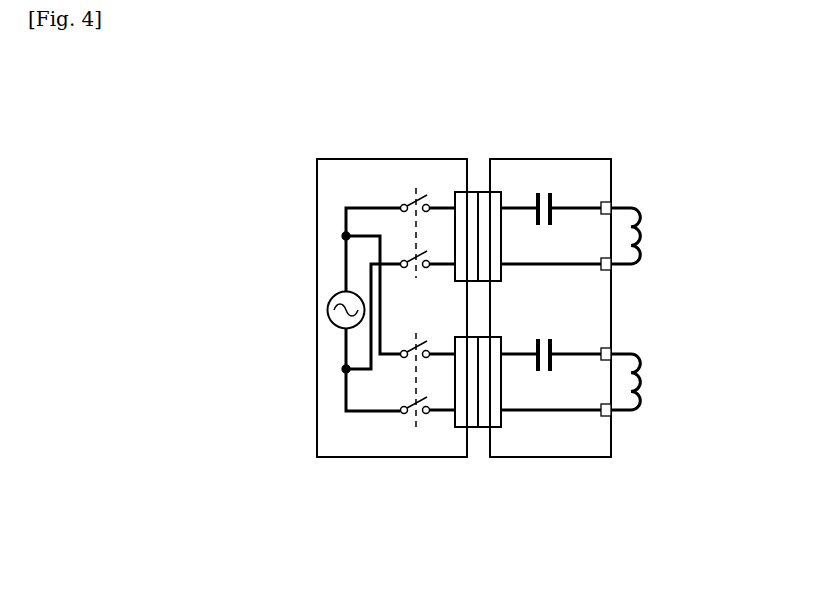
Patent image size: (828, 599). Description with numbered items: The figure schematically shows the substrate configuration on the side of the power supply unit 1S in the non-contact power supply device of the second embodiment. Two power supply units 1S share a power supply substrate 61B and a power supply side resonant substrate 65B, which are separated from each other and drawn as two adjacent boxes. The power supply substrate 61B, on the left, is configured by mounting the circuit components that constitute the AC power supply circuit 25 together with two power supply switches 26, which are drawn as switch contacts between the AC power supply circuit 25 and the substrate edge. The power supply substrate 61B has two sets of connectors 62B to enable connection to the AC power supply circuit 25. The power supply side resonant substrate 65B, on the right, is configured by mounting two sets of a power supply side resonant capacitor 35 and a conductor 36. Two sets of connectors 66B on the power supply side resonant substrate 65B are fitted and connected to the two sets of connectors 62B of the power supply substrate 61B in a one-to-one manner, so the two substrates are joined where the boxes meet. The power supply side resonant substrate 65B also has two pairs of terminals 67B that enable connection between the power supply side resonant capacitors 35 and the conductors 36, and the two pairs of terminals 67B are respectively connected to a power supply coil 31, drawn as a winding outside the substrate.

The power supply unit 1S is at (287, 246).
The AC power supply circuit 25 is at (327, 315).
The power supply switch 26 is at (405, 190).
The power supply coil 31 is at (642, 235).
The power supply side resonant capacitor 35 is at (544, 190).
The conductor 36 is at (557, 265).
The power supply substrate 61B is at (363, 450).
The connector 62B is at (470, 195).
The power supply side resonant substrate 65B is at (565, 448).
The connector 66B is at (487, 193).
The terminal 67B is at (611, 200).